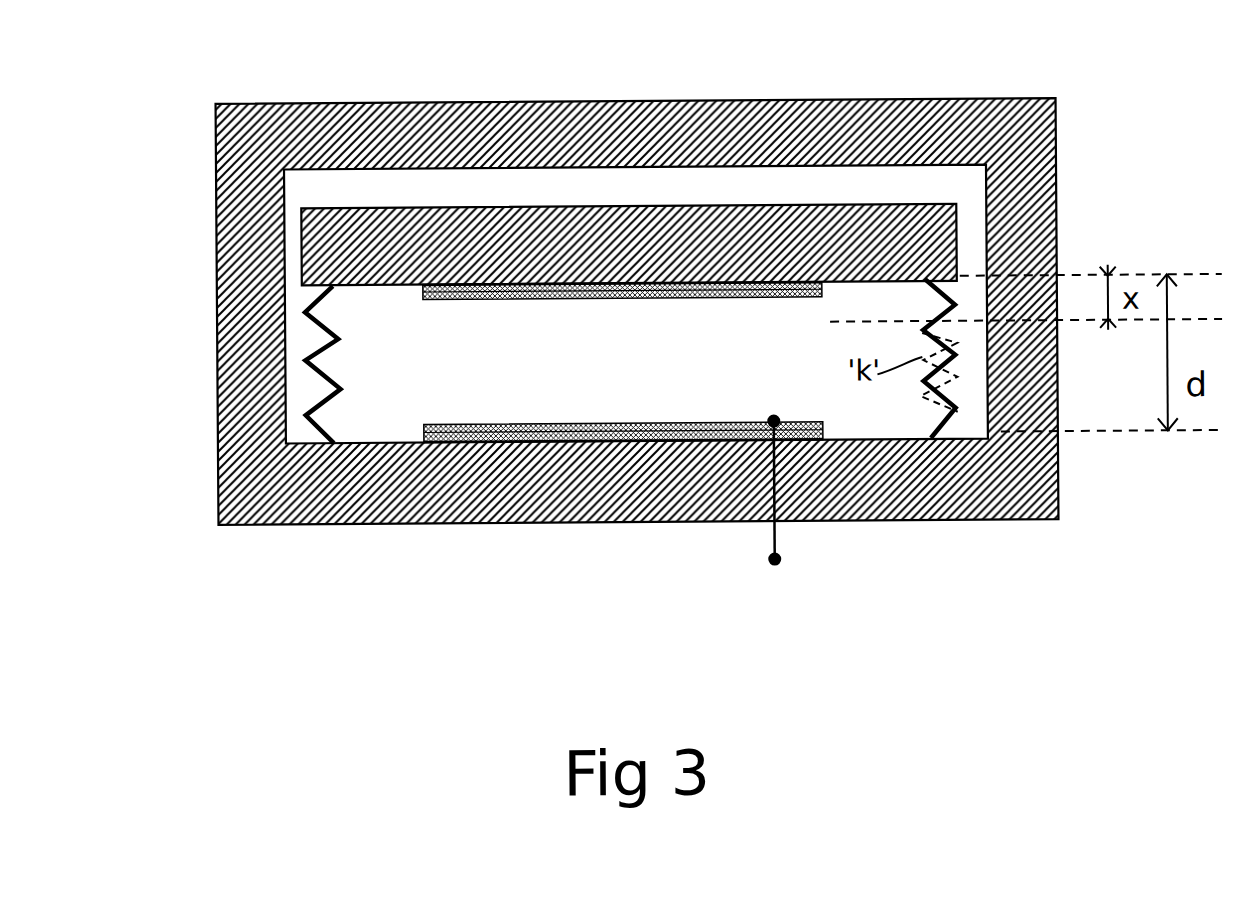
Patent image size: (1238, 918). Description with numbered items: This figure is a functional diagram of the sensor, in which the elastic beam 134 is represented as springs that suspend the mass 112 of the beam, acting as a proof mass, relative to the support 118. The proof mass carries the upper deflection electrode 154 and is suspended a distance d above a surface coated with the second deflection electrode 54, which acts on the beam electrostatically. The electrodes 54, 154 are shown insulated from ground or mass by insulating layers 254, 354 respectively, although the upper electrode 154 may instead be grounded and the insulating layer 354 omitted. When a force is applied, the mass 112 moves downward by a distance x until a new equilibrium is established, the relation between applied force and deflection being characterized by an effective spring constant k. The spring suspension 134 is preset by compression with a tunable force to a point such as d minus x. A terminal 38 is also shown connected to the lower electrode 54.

The support 118 is at (414, 522).
The mass 112 is at (928, 233).
The deflection electrode 154 is at (605, 299).
The insulating layer 354 is at (550, 282).
The second deflection electrode 54 is at (668, 422).
The insulating layer 254 is at (643, 440).
The elastic beam 134 is at (332, 353).
The electrical terminal 38 is at (780, 560).